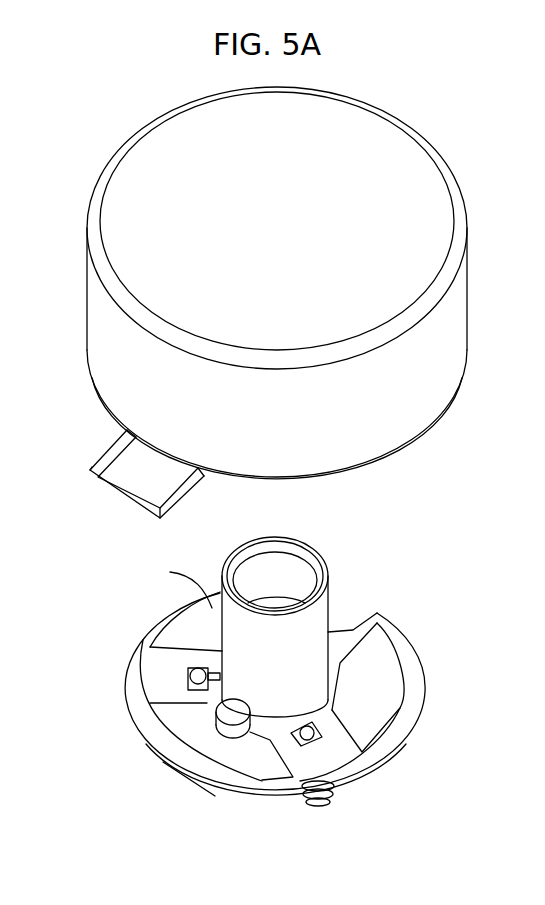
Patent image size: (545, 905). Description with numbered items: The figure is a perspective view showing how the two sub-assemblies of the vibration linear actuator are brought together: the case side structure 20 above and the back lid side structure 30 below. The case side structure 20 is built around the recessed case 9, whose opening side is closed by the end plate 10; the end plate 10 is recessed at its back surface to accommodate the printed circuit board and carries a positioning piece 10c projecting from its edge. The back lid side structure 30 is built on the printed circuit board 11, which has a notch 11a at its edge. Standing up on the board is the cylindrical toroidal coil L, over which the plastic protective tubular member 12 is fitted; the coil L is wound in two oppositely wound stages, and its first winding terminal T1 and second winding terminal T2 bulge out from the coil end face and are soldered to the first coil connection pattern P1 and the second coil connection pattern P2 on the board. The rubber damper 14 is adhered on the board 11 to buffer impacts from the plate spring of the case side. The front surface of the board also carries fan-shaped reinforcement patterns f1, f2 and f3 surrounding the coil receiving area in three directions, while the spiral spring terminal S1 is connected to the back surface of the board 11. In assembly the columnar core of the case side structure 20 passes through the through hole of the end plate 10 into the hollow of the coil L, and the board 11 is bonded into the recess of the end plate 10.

The case side structure 20 is at (289, 313).
The recessed case 9 is at (450, 332).
The end plate 10 is at (415, 430).
The positioning piece 10c is at (95, 482).
The back lid side structure 30 is at (295, 687).
The printed circuit board 11 is at (330, 677).
The notch 11a is at (355, 620).
The protective tubular member 12 is at (228, 618).
The rubber damper 14 is at (220, 712).
The toroidal coil L is at (305, 565).
The first winding terminal T1 is at (298, 723).
The second winding terminal T2 is at (217, 677).
The first coil connection pattern P1 is at (320, 730).
The second coil connection pattern P2 is at (188, 683).
The spiral spring terminal S1 is at (320, 803).
The fan-shaped reinforcement pattern f1 is at (375, 722).
The fan-shaped reinforcement pattern f2 is at (172, 577).
The fan-shaped reinforcement pattern f3 is at (252, 764).